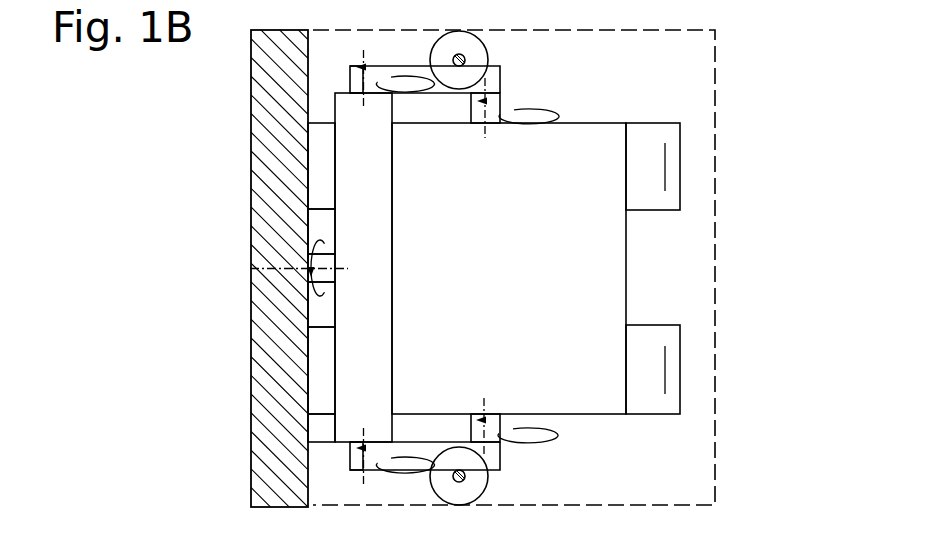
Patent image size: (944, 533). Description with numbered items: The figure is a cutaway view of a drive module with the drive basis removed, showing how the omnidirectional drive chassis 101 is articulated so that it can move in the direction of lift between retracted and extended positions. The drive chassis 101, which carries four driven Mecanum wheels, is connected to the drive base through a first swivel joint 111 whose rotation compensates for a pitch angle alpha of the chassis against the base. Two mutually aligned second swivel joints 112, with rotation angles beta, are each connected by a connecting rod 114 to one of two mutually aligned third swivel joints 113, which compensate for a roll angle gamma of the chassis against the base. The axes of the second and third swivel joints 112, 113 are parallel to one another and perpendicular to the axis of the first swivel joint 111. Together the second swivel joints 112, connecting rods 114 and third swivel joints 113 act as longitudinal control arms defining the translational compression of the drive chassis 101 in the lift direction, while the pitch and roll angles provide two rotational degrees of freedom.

The drive chassis 101 is at (320, 165).
The first swivel joint 111 is at (250, 269).
The second swivel joint 112 is at (352, 88).
The third swivel joint 113 is at (487, 115).
The connecting rod 114 is at (410, 80).